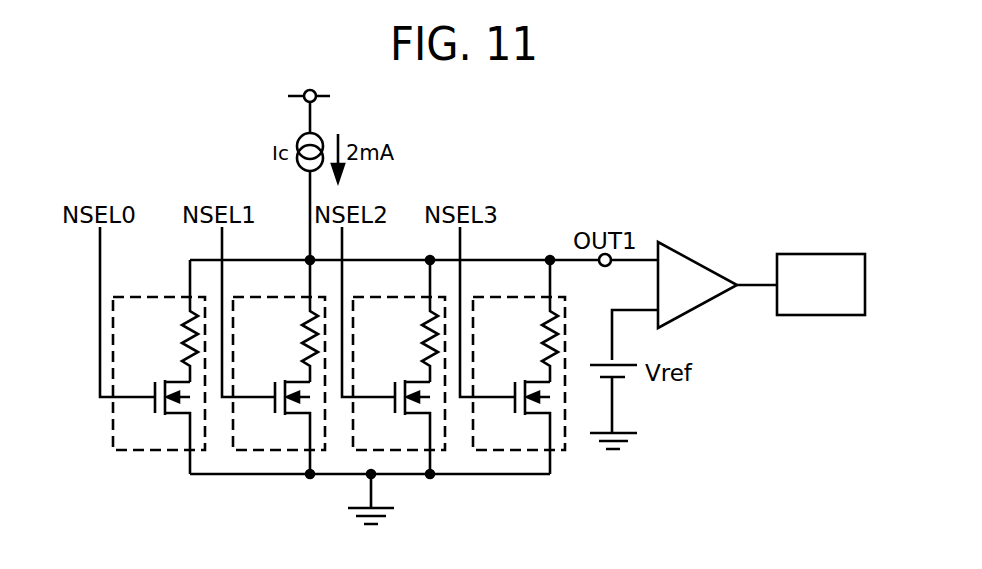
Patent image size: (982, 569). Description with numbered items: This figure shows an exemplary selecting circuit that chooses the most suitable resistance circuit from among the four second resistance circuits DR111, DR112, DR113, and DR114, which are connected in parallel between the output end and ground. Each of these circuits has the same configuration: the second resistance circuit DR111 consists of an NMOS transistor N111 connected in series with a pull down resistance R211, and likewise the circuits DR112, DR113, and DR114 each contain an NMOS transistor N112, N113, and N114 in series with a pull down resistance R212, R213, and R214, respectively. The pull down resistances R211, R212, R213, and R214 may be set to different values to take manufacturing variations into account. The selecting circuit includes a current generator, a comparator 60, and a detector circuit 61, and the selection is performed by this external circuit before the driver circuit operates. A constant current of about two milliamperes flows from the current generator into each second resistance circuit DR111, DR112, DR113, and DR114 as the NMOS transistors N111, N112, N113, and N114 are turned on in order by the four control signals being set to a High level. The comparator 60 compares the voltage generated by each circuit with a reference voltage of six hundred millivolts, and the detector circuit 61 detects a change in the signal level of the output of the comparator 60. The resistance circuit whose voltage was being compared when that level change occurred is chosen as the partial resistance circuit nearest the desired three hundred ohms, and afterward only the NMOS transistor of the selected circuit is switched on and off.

The comparator 60 is at (697, 258).
The detector circuit 61 is at (835, 254).
The second resistance circuit DR111 is at (158, 401).
The second resistance circuit DR112 is at (279, 401).
The second resistance circuit DR113 is at (402, 406).
The second resistance circuit DR114 is at (519, 401).
The pull down resistance R211 is at (161, 321).
The pull down resistance R212 is at (281, 321).
The pull down resistance R213 is at (401, 321).
The pull down resistance R214 is at (521, 321).
The NMOS transistor N111 is at (142, 450).
The NMOS transistor N112 is at (258, 451).
The NMOS transistor N113 is at (403, 452).
The NMOS transistor N114 is at (517, 452).